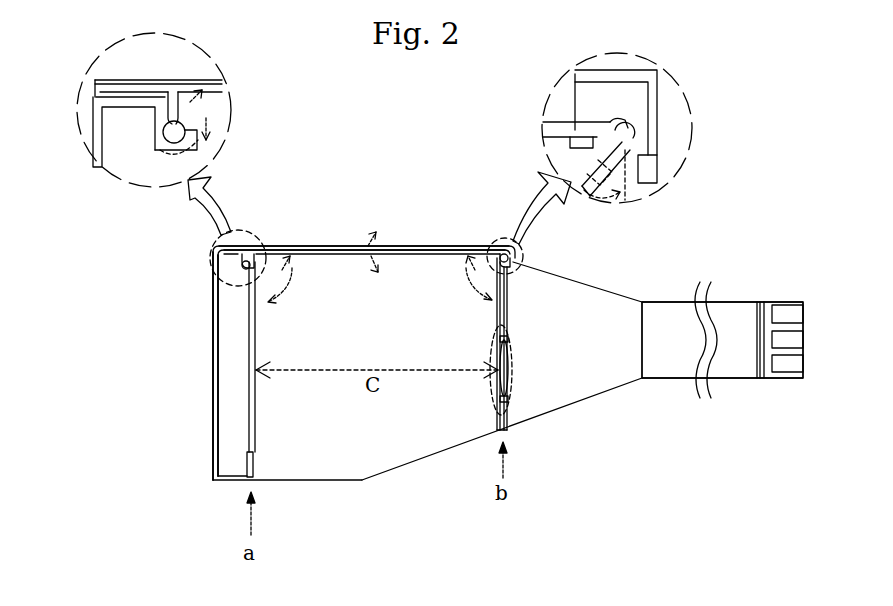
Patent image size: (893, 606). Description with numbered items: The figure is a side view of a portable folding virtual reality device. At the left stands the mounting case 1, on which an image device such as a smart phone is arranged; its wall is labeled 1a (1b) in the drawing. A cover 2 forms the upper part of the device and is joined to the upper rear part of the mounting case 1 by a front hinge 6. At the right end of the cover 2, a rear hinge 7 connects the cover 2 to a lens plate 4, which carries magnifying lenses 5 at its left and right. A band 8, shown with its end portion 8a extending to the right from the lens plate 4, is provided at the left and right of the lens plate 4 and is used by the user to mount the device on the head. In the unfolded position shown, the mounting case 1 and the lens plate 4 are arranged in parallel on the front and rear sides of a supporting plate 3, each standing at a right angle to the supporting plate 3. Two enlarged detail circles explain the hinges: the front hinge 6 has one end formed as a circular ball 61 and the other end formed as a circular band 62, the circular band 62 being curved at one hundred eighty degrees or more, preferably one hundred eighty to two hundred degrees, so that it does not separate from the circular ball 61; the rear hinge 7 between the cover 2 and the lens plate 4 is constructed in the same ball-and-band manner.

The mounting case 1 is at (93, 136).
The side wall 1a is at (212, 400).
The side wall 1b is at (215, 366).
The cover 2 is at (413, 245).
The supporting plate 3 is at (252, 332).
The lens plate 4 is at (508, 425).
The magnifying lens 5 is at (510, 375).
The hinge 6 is at (240, 270).
The circular ball 61 is at (167, 152).
The circular band 62 is at (200, 152).
The hinge 7 is at (616, 116).
The band 8 is at (630, 380).
The connector plug 8a is at (722, 340).